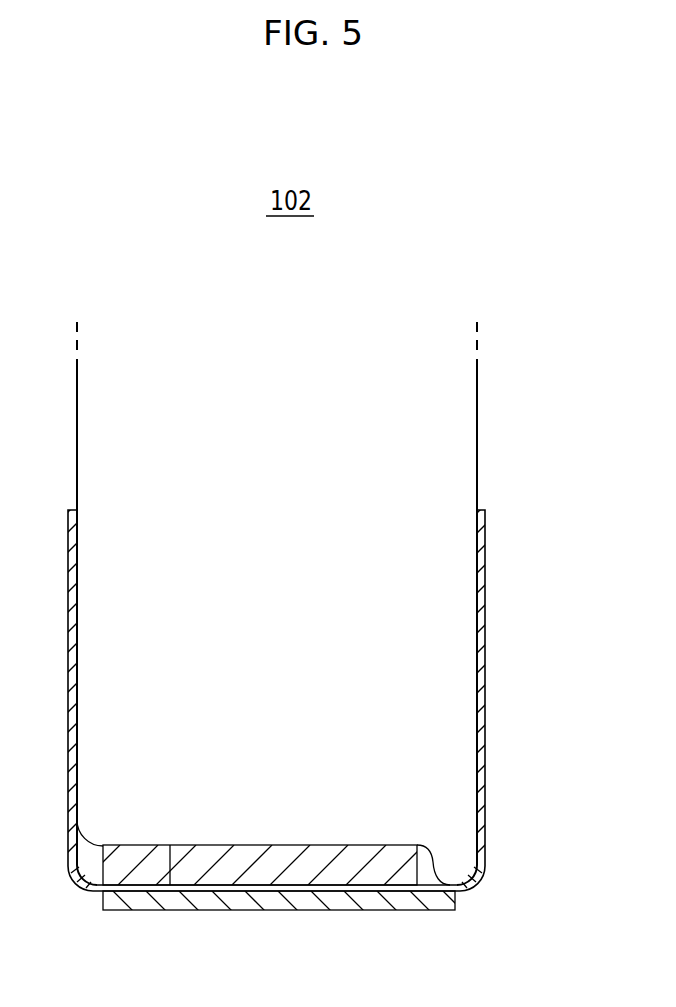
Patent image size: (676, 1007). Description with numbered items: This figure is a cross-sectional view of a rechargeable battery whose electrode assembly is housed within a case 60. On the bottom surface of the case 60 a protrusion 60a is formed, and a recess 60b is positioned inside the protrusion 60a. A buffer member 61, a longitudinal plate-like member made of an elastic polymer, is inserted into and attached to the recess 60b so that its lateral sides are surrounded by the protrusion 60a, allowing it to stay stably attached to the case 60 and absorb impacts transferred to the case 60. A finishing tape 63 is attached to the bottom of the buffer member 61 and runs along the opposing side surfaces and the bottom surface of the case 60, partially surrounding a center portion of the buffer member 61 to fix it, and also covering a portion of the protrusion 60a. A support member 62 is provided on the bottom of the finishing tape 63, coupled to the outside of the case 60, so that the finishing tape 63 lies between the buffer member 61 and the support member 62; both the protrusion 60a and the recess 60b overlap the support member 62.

The case 60 is at (477, 428).
The protrusion 60a is at (460, 870).
The recess 60b is at (168, 862).
The buffer member 61 is at (222, 872).
The support member 62 is at (297, 903).
The finishing tape 63 is at (483, 686).